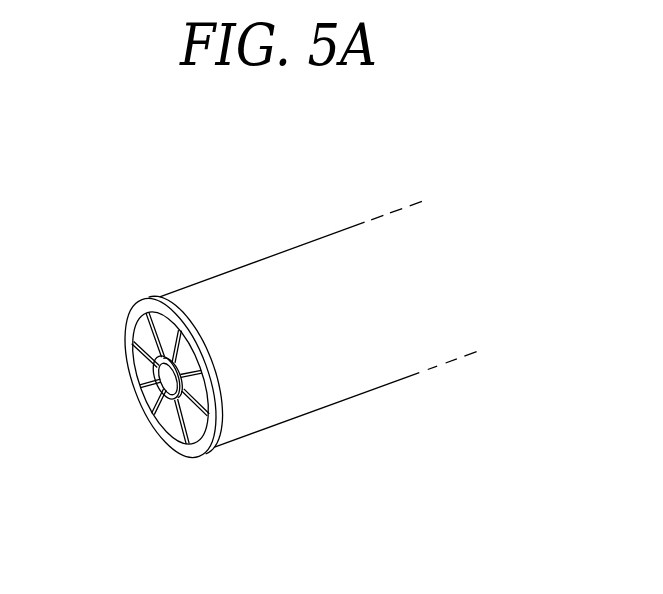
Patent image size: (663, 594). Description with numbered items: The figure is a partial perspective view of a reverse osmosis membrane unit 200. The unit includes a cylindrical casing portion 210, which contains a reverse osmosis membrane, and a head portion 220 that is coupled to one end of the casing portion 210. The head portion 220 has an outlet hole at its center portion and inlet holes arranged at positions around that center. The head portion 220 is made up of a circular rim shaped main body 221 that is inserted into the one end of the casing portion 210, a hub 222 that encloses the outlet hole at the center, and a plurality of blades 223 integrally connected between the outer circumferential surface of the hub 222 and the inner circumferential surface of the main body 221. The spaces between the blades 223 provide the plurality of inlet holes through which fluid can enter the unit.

The reverse osmosis membrane unit 200 is at (307, 197).
The casing portion 210 is at (287, 289).
The head portion 220 is at (218, 524).
The main body 221 is at (138, 398).
The hub 222 is at (163, 398).
The blades 223 is at (184, 443).